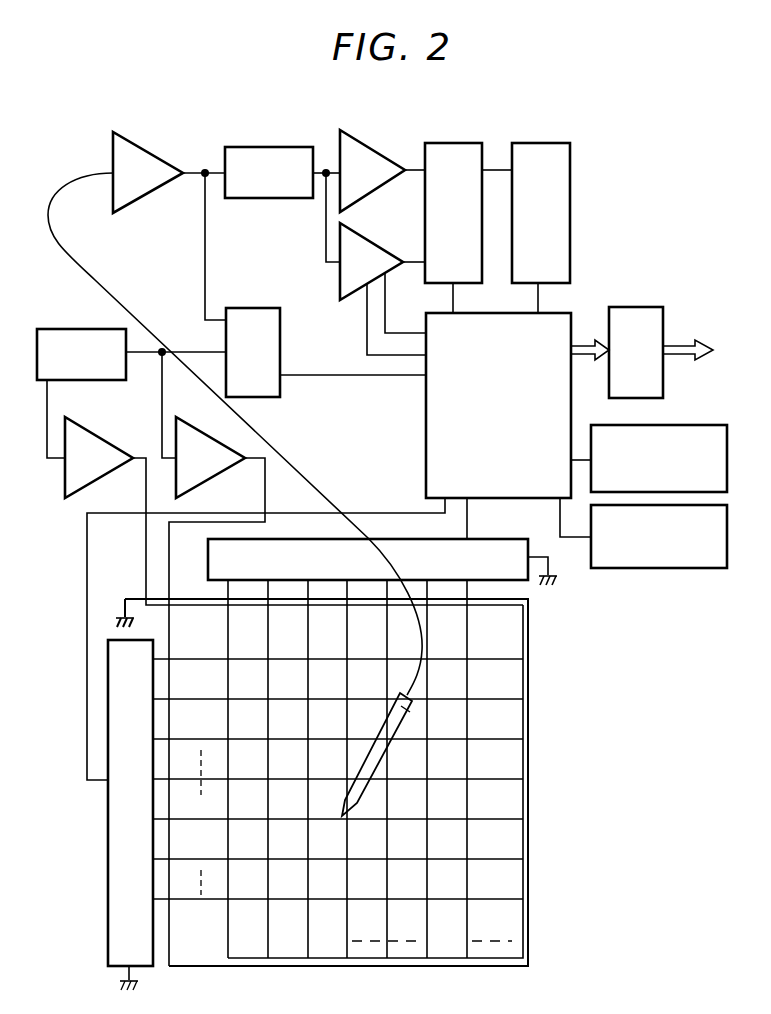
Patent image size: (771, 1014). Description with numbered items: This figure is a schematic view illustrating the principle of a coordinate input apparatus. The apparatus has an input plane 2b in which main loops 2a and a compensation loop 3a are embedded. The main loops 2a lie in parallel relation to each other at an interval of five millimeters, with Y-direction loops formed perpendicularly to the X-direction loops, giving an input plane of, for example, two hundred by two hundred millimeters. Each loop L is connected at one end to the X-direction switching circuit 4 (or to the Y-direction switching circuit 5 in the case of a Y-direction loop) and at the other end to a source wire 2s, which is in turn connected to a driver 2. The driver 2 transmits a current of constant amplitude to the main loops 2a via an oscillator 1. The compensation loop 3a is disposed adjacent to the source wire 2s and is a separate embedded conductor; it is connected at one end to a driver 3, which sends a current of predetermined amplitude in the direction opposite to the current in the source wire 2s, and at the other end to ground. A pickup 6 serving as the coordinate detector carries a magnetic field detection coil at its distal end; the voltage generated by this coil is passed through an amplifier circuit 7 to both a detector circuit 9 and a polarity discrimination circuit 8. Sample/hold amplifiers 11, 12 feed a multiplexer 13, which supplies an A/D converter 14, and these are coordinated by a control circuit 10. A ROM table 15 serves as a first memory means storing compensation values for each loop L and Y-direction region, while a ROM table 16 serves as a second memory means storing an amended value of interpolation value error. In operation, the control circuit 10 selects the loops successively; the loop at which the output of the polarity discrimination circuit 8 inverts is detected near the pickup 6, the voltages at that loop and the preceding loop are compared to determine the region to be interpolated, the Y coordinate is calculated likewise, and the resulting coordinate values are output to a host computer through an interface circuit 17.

The oscillator 1 is at (42, 330).
The driver 2 is at (85, 429).
The driver 3 is at (195, 429).
The X-direction switching circuit 4 is at (531, 541).
The Y-direction switching circuit 5 is at (110, 641).
The pickup 6 is at (402, 713).
The amplifier circuit 7 is at (129, 147).
The polarity discrimination circuit 8 is at (268, 311).
The detector circuit 9 is at (297, 147).
The control circuit 10 is at (565, 313).
The sample/hold amplifier 11 is at (359, 139).
The sample/hold amplifier 12 is at (375, 246).
The multiplexer 13 is at (465, 143).
The A/D converter 14 is at (553, 143).
The ROM table 15 is at (727, 430).
The ROM table 16 is at (727, 510).
The interface circuit 17 is at (647, 307).
The main loops 2a is at (467, 639).
The input plane 2b is at (512, 917).
The source wire 2s is at (528, 762).
The compensation loop 3a is at (529, 657).
The loop L is at (468, 803).